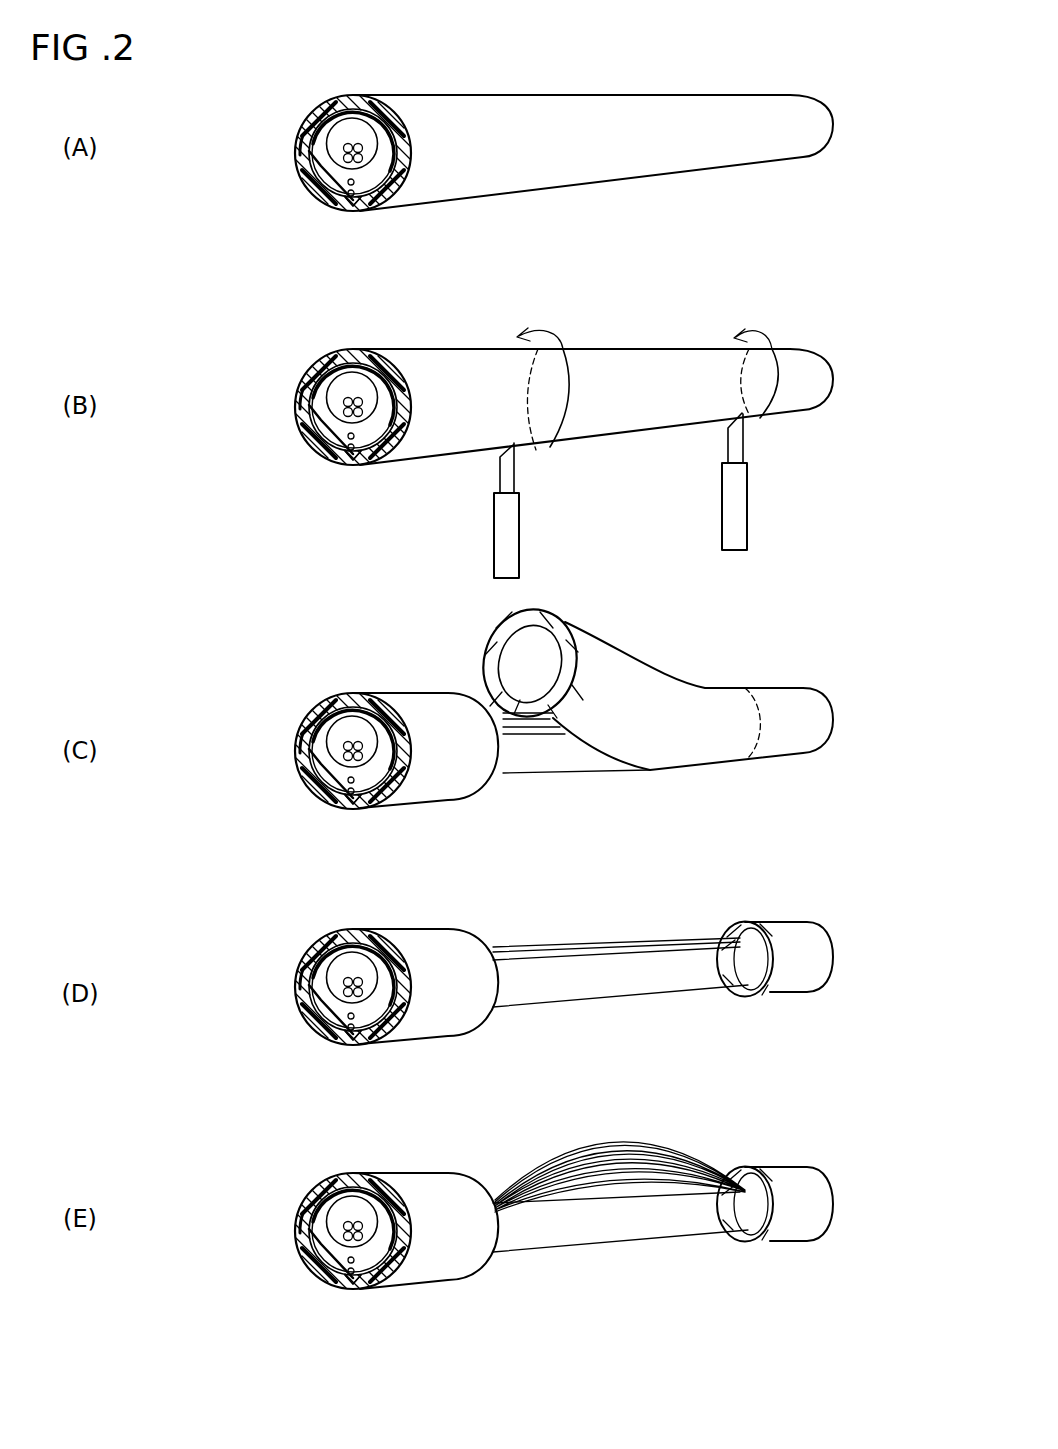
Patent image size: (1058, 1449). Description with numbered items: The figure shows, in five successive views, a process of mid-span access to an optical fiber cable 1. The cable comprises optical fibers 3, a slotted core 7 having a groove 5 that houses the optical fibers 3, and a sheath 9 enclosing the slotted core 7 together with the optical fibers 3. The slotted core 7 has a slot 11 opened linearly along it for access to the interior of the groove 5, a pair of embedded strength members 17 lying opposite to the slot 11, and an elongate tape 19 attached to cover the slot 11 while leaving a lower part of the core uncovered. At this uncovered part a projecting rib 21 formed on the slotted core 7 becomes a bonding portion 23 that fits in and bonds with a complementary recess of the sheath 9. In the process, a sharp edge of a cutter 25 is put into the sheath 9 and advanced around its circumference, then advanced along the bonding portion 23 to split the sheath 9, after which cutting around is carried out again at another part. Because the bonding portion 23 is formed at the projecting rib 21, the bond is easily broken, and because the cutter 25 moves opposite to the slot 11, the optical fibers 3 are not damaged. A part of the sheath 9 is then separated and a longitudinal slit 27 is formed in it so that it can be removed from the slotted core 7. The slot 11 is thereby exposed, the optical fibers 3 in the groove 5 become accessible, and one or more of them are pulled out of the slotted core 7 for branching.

The optical fiber cable 1 is at (716, 332).
The optical fibers 3 is at (657, 1167).
The groove 5 is at (335, 662).
The slotted core 7 is at (567, 755).
The sheath 9 is at (636, 673).
The slot 11 is at (530, 722).
The strength members 17 is at (386, 750).
The elongate tape 19 is at (264, 676).
The projecting rib 21 is at (339, 755).
The bonding portion 23 is at (298, 761).
The cutter 25 is at (506, 517).
The longitudinal slit 27 is at (532, 698).